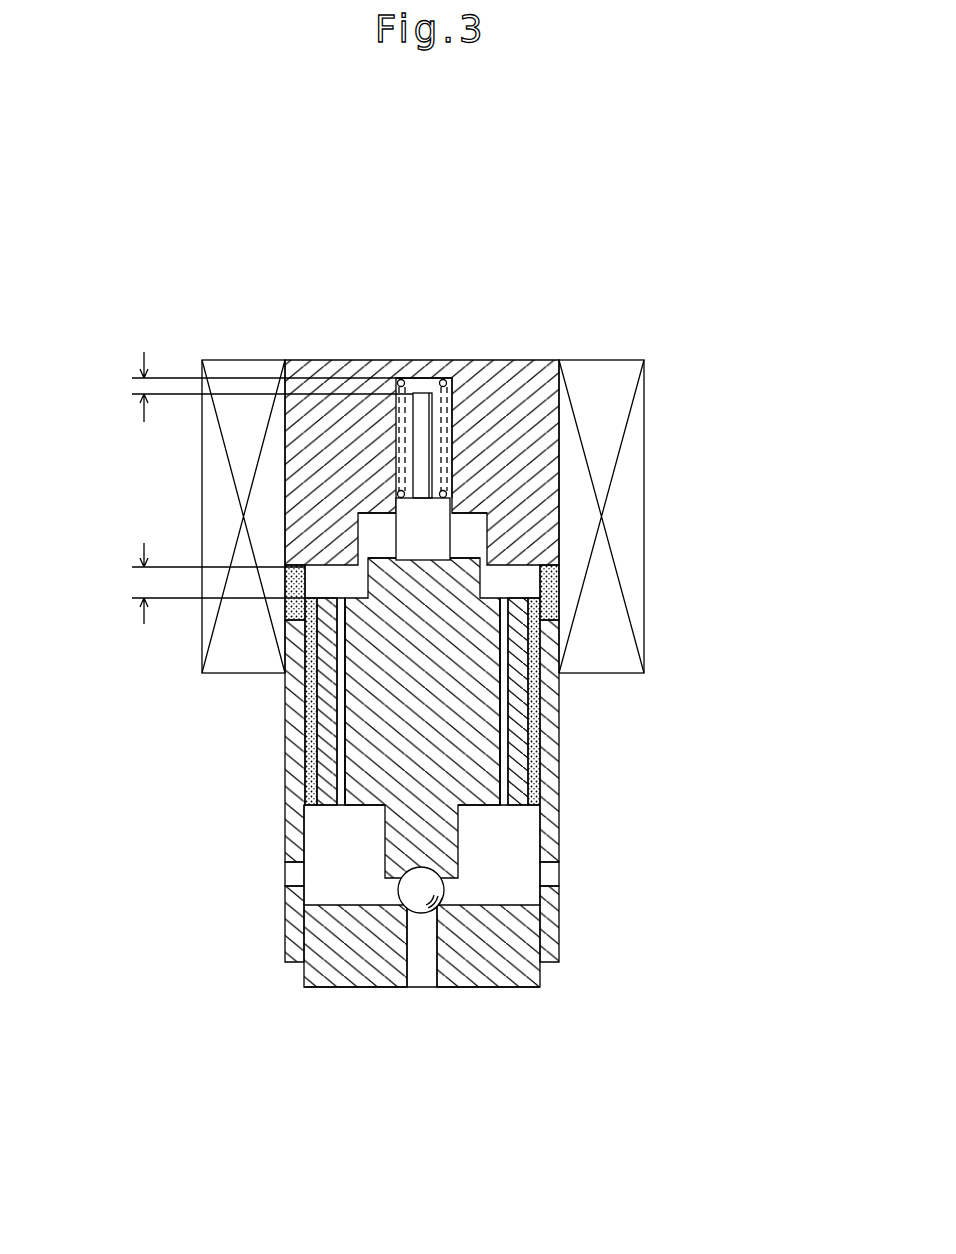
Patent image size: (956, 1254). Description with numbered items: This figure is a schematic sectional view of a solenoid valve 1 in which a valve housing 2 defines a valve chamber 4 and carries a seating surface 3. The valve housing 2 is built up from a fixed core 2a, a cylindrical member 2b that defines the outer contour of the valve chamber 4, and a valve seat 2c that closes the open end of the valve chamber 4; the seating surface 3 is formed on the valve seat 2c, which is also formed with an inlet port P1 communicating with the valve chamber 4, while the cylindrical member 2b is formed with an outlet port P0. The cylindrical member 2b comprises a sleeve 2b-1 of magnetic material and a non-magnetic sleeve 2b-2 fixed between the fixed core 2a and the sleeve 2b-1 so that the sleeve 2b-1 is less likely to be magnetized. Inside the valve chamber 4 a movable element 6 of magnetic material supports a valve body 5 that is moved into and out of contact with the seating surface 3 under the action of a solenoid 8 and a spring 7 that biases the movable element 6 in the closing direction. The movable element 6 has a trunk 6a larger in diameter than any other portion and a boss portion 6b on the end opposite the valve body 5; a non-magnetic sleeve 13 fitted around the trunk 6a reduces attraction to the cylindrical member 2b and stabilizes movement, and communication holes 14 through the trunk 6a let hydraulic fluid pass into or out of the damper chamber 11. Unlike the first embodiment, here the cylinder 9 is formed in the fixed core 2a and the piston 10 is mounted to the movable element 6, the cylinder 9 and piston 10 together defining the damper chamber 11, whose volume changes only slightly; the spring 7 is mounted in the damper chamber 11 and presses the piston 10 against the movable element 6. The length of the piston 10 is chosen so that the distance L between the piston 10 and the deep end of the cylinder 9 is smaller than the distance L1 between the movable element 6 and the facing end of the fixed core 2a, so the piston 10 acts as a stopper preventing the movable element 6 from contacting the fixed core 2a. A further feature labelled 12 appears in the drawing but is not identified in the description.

The solenoid valve 1 is at (668, 368).
The valve housing 2 is at (284, 850).
The fixed core 2a is at (522, 378).
The cylindrical member 2b is at (547, 763).
The sleeve 2b-1 is at (547, 637).
The sleeve 2b-2 is at (557, 590).
The valve seat 2c is at (520, 987).
The seating surface 3 is at (470, 972).
The valve chamber 4 is at (515, 577).
The valve body 5 is at (414, 894).
The movable element 6 is at (378, 678).
The trunk 6a is at (518, 698).
The boss portion 6b is at (356, 540).
The spring 7 is at (404, 378).
The solenoid 8 is at (228, 358).
The cylinder 9 is at (447, 380).
The piston 10 is at (422, 528).
The damper chamber 11 is at (425, 392).
The step portion 12 is at (453, 512).
The non-magnetic sleeve 13 is at (538, 777).
The communication holes 14 is at (503, 748).
The distance L is at (261, 387).
The distance L1 is at (200, 583).
The outlet port P0 is at (290, 878).
The inlet port P1 is at (418, 982).